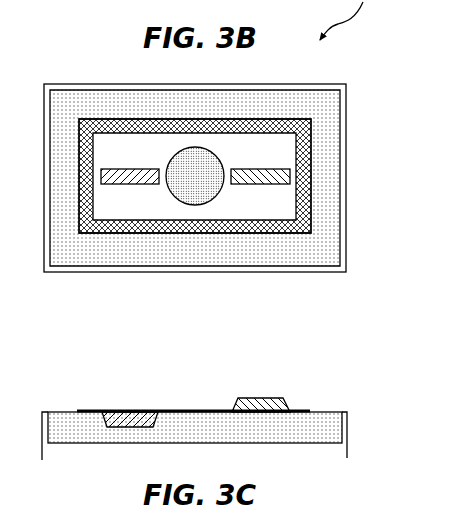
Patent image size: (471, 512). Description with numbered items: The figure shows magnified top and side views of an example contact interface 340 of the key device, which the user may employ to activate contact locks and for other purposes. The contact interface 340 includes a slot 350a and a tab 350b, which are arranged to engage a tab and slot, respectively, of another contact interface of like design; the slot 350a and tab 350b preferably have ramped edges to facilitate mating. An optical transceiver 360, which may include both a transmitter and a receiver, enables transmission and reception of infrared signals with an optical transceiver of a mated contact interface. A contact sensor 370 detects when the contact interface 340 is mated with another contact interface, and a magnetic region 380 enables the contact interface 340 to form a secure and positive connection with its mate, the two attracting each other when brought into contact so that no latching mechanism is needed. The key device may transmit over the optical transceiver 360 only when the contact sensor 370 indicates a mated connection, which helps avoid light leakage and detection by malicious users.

In FIG. 3C, the contact interface 340 is at (322, 356).
In FIG. 3B, the slot 350a is at (131, 184).
In FIG. 3C, the slot 350a is at (131, 412).
In FIG. 3B, the tab 350b is at (261, 184).
In FIG. 3C, the tab 350b is at (261, 398).
In FIG. 3B, the optical transceiver 360 is at (195, 205).
In FIG. 3B, the contact sensor 370 is at (85, 228).
In FIG. 3C, the contact sensor 370 is at (85, 411).
In FIG. 3B, the magnetic region 380 is at (58, 258).
In FIG. 3C, the magnetic region 380 is at (58, 412).